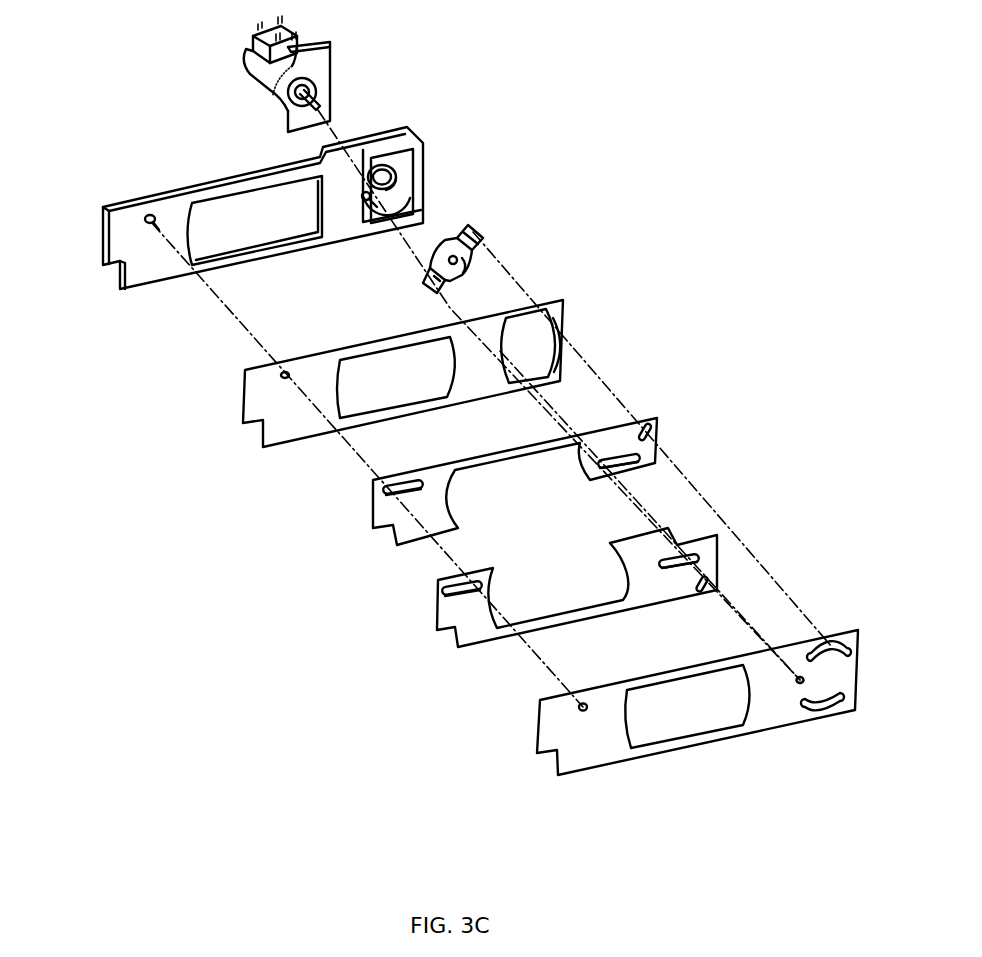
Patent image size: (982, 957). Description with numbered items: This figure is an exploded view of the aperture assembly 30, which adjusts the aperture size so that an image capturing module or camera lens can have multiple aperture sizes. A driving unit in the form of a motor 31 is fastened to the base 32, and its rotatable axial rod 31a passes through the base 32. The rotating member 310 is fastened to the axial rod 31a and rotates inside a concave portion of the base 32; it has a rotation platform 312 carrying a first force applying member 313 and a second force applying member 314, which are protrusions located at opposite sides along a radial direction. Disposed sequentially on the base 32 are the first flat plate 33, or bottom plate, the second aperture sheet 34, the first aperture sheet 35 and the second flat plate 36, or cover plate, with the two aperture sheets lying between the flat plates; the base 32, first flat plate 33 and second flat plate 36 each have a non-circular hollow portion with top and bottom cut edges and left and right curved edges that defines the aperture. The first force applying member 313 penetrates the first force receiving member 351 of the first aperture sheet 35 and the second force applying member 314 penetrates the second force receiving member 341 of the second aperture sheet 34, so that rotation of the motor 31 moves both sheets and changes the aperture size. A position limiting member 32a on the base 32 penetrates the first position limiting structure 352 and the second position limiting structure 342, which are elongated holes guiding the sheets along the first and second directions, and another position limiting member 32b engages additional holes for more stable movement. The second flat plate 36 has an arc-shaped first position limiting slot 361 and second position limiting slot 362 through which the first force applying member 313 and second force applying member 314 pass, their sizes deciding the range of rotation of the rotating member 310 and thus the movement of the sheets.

The aperture assembly 30 is at (94, 99).
The motor 31 is at (250, 53).
The axial rod 31a is at (318, 100).
The base 32 is at (137, 288).
The position limiting member 32a is at (151, 215).
The position limiting member 32b is at (362, 200).
The rotating member 310 is at (443, 236).
The rotation platform 312 is at (463, 262).
The first force applying member 313 is at (430, 289).
The second force applying member 314 is at (478, 240).
The first flat plate 33 is at (283, 446).
The second aperture sheet 34 is at (400, 544).
The second force receiving member 341 is at (649, 418).
The second position limiting structure 342 is at (378, 491).
The first aperture sheet 35 is at (462, 648).
The first force receiving member 351 is at (701, 582).
The first position limiting structure 352 is at (441, 593).
The second flat plate 36 is at (576, 776).
The first position limiting slot 361 is at (828, 712).
The second position limiting slot 362 is at (830, 640).